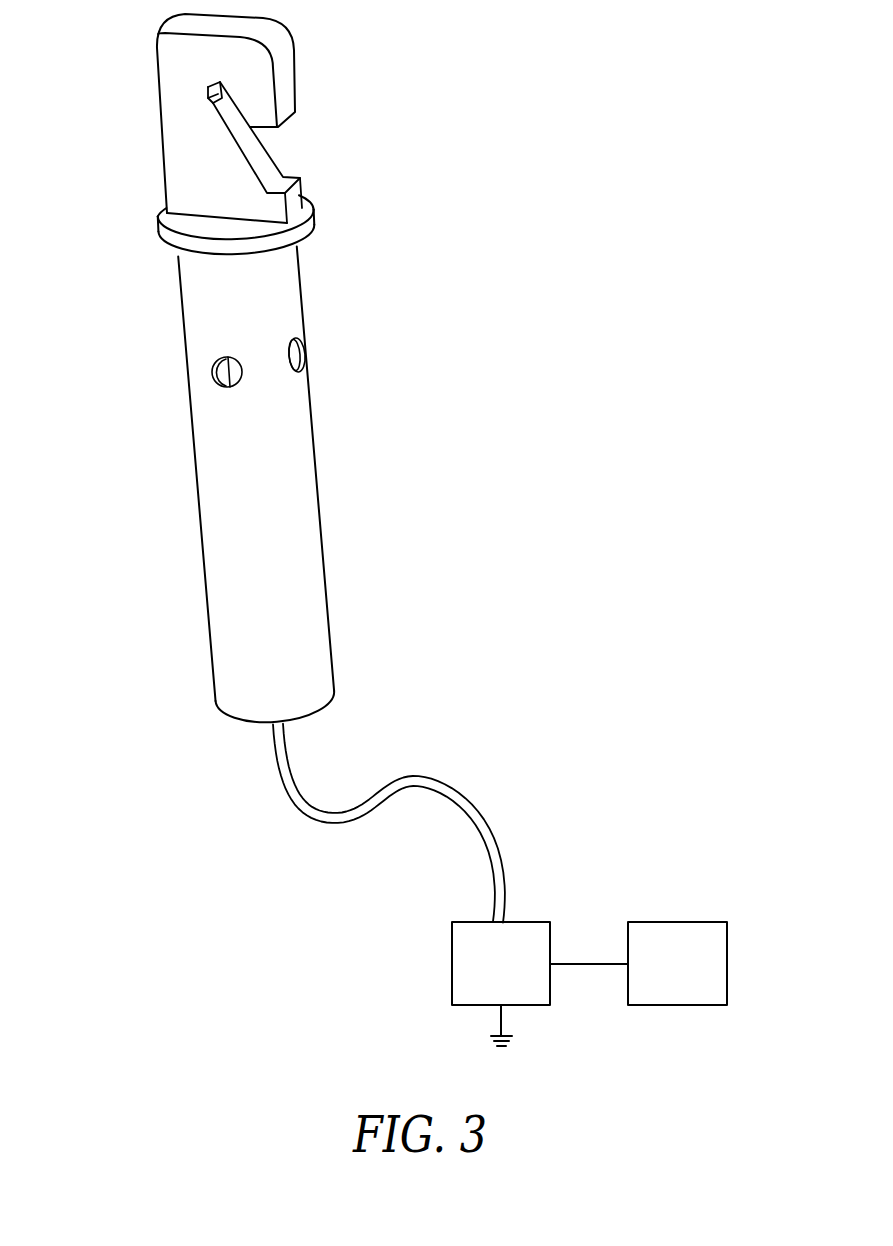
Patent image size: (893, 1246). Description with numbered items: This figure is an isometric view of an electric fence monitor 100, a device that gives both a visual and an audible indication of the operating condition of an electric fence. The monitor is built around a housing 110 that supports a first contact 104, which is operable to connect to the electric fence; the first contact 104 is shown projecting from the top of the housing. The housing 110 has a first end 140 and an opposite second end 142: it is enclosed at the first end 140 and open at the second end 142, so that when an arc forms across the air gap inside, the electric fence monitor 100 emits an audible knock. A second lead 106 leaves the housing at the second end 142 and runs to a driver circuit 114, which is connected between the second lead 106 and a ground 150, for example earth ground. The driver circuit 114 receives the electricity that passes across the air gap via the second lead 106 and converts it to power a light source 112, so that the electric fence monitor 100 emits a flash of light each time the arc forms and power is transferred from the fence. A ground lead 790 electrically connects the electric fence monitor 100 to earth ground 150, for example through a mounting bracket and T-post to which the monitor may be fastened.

The electric fence monitor 100 is at (356, 170).
The first contact 104 is at (232, 111).
The first end 140 is at (148, 227).
The housing 110 is at (318, 371).
The second end 142 is at (244, 737).
The second lead 106 is at (453, 792).
The driver circuit 114 is at (520, 922).
The light source 112 is at (670, 922).
The ground lead 790 is at (498, 1015).
The ground 150 is at (509, 1057).